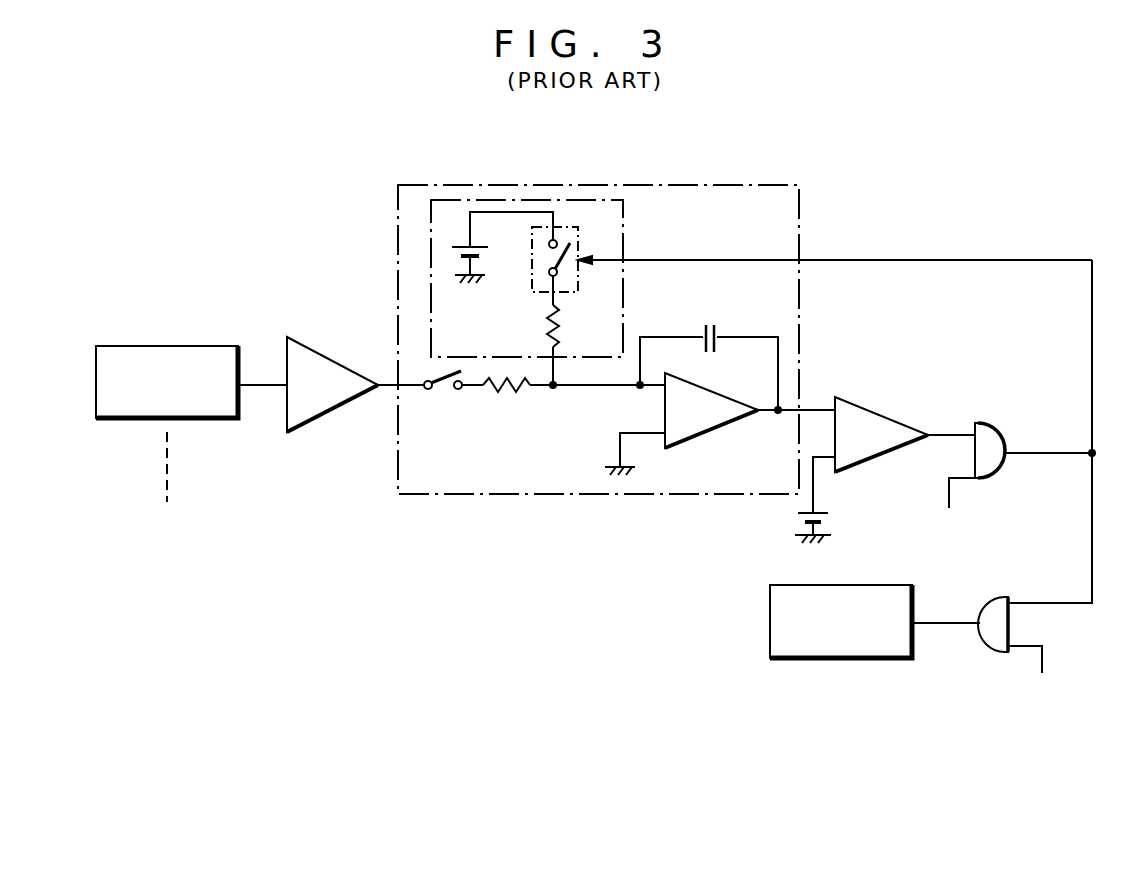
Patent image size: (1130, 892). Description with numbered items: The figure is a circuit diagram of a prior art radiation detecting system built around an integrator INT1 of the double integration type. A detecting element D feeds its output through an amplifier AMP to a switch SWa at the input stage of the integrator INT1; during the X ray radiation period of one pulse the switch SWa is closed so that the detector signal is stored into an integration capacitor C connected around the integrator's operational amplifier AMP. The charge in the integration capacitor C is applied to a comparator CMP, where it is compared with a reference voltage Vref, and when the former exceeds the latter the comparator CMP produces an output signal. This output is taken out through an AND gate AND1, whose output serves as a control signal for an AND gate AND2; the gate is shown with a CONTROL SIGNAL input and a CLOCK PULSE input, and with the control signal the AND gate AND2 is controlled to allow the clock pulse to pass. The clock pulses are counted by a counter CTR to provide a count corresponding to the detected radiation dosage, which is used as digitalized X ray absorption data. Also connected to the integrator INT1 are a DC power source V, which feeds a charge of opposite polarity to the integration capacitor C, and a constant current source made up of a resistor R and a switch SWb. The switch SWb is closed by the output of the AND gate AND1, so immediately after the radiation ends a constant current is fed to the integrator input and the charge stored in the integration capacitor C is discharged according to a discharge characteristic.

The detecting element D is at (204, 356).
The amplifier AMP is at (330, 398).
The integrator INT1 is at (445, 497).
The switch SWa is at (443, 395).
The switch SWb is at (541, 270).
The DC power source V is at (482, 258).
The resistor R is at (546, 336).
The integration capacitor C is at (706, 324).
The comparator CMP is at (873, 428).
The reference voltage Vref is at (832, 524).
The AND gate AND1 is at (988, 440).
The control signal CONTROL SIGNAL is at (979, 539).
The counter CTR is at (841, 621).
The AND gate AND2 is at (985, 632).
The clock pulse CLOCK PULSE is at (1057, 701).